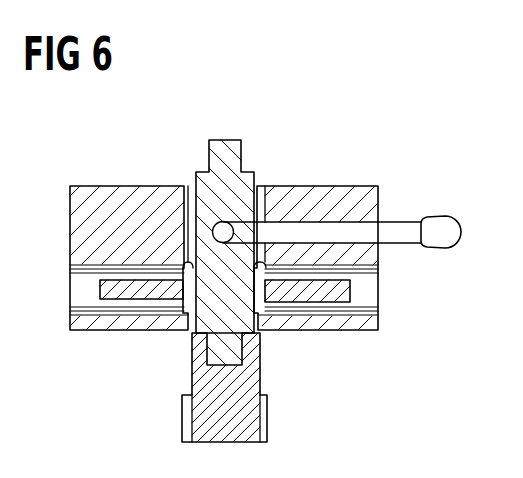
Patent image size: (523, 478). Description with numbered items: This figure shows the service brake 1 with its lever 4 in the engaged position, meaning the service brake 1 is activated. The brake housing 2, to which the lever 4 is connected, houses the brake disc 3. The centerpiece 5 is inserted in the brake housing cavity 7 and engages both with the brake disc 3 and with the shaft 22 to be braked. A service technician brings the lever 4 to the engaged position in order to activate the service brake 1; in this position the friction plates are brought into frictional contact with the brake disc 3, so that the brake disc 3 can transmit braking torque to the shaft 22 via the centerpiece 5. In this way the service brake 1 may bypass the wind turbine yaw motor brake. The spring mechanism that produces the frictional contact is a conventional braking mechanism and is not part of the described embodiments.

The service brake 1 is at (351, 141).
The brake housing 2 is at (80, 232).
The brake disc 3 is at (145, 300).
The lever 4 is at (395, 232).
The centerpiece 5 is at (257, 180).
The brake housing cavity 7 is at (190, 186).
The shaft to be braked 22 is at (258, 381).